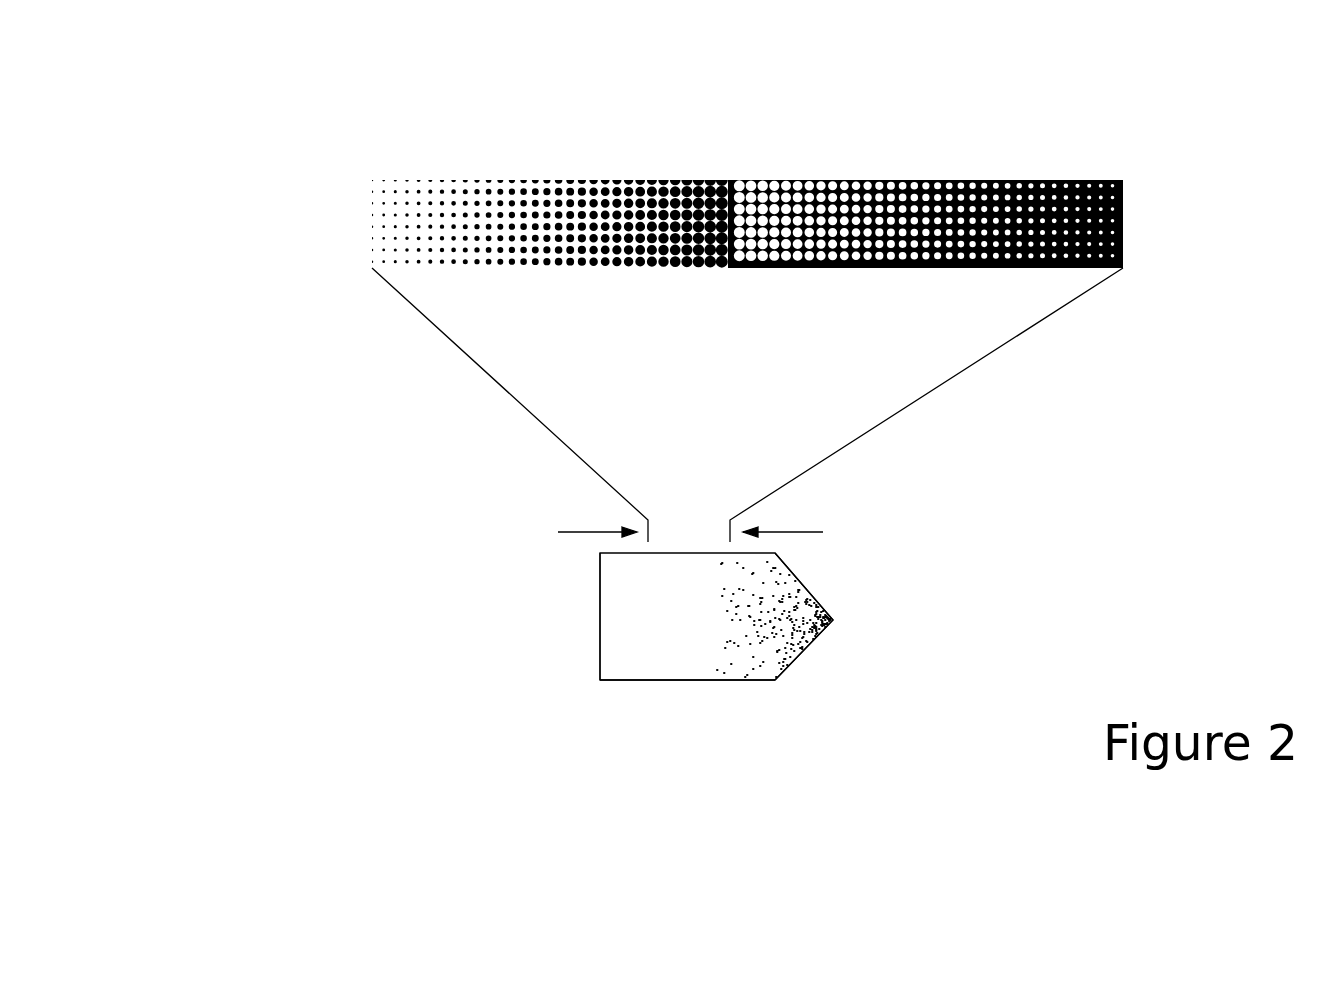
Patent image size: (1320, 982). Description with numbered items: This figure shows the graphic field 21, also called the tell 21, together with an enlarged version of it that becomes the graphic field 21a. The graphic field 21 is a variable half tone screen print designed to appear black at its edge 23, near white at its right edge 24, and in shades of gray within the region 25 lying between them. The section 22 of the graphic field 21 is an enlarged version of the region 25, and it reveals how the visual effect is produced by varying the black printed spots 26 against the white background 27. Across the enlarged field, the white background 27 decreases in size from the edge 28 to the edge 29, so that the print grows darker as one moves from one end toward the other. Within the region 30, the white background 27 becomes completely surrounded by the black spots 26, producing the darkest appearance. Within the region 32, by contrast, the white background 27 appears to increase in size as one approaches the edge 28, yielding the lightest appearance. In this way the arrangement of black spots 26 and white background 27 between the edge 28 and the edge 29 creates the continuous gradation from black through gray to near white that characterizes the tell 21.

The graphic field 21a is at (718, 146).
The edge 28 is at (365, 177).
The edge 29 is at (1123, 222).
The region 32 is at (537, 175).
The white background 27 is at (637, 175).
The black printed spots 26 is at (727, 185).
The region 30 is at (1017, 187).
The graphic field 21 is at (713, 666).
The section 22 is at (832, 532).
The edge 23 is at (843, 625).
The right edge 24 is at (590, 611).
The region 25 is at (682, 663).